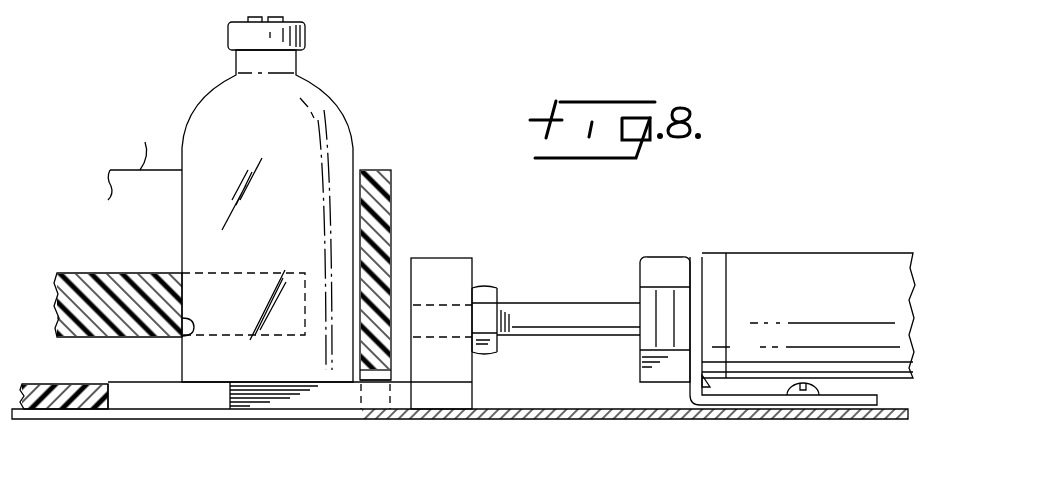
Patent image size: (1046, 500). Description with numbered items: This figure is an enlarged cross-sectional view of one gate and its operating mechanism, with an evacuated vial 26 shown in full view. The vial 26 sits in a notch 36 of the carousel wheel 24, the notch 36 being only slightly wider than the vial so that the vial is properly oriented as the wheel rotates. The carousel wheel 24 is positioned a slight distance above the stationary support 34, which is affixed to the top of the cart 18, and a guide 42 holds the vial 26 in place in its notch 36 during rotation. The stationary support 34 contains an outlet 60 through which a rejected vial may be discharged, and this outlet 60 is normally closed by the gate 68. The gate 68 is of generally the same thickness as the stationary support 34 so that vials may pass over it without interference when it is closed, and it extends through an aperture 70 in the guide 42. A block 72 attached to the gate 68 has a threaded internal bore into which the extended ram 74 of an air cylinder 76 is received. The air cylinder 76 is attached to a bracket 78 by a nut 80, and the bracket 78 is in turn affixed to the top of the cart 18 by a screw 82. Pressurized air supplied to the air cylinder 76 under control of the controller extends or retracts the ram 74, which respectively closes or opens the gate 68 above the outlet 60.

The cart 18 is at (566, 419).
The carousel wheel 24 is at (113, 273).
The vial 26 is at (333, 108).
The stationary support 34 is at (70, 390).
The notch 36 is at (182, 337).
The guide 42 is at (380, 170).
The outlet 60 is at (112, 398).
The gate 68 is at (280, 400).
The aperture 70 is at (374, 376).
The block 72 is at (460, 258).
The ram 74 is at (584, 310).
The air cylinder 76 is at (855, 268).
The bracket 78 is at (695, 258).
The nut 80 is at (655, 262).
The screw 82 is at (813, 395).